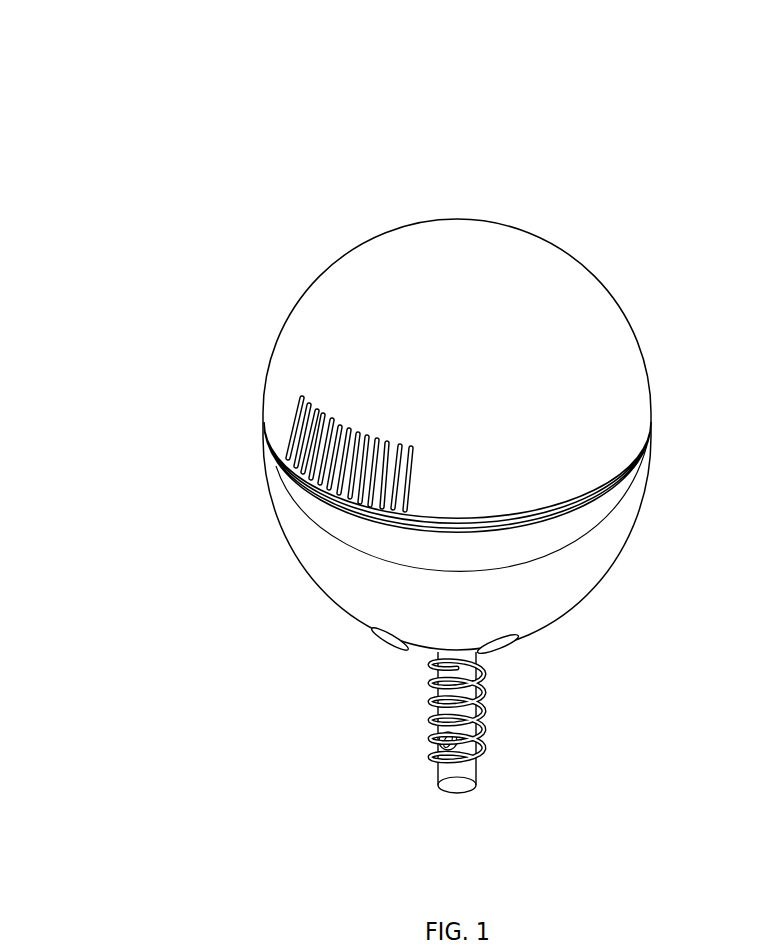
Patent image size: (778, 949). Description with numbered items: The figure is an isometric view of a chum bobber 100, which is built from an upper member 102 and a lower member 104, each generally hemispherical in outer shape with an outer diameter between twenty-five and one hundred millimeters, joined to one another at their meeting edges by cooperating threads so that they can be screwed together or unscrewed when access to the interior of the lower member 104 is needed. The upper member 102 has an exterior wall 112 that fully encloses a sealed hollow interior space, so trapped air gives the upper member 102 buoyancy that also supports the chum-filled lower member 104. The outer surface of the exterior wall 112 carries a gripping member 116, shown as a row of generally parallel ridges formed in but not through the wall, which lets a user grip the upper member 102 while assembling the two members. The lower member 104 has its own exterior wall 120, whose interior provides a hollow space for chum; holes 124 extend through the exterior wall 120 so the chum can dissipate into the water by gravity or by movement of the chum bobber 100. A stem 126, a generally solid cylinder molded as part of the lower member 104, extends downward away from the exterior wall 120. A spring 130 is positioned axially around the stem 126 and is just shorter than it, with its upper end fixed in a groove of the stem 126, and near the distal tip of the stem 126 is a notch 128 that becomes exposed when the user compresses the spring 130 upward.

The chum bobber 100 is at (129, 81).
The upper member 102 is at (265, 261).
The lower member 104 is at (191, 665).
The exterior wall 112 is at (524, 246).
The gripping member 116 is at (340, 427).
The exterior wall 120 is at (588, 578).
The holes 124 is at (383, 637).
The stem 126 is at (475, 782).
The notch 128 is at (432, 738).
The spring 130 is at (485, 705).